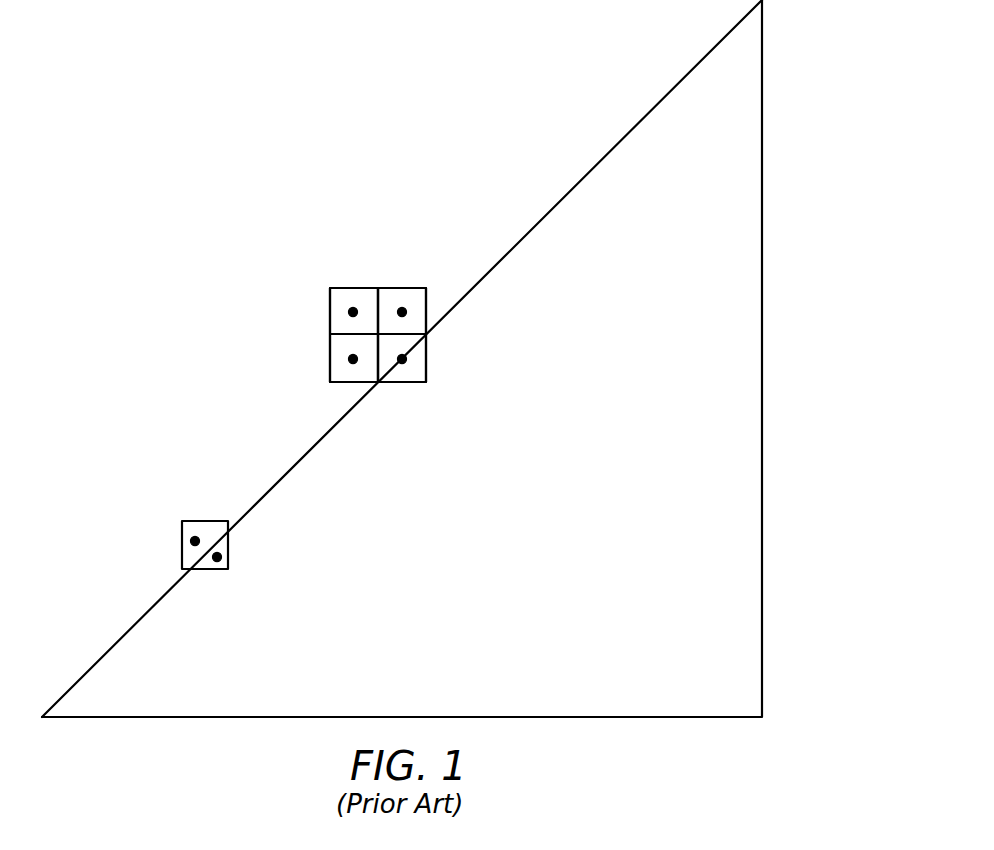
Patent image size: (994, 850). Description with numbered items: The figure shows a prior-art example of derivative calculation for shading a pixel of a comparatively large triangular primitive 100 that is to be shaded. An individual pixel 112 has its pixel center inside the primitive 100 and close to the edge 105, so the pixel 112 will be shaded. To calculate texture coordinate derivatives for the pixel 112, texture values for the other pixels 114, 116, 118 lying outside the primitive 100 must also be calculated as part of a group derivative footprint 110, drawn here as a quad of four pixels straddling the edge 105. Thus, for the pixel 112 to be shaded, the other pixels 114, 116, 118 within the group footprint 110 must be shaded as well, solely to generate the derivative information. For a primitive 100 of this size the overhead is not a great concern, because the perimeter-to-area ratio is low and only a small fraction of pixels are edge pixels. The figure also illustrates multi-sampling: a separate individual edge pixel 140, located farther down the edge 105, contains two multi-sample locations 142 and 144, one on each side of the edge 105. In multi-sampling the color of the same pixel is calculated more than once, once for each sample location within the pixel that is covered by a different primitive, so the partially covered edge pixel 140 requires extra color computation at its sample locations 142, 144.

The primitive 100 is at (459, 358).
The edge 105 is at (402, 358).
The group derivative footprint 110 is at (367, 280).
The pixel 112 is at (449, 361).
The pixel 114 is at (296, 364).
The pixel 116 is at (296, 301).
The pixel 118 is at (433, 283).
The edge pixel 140 is at (185, 540).
The multi-sample location 142 is at (192, 542).
The multi-sample location 144 is at (255, 585).